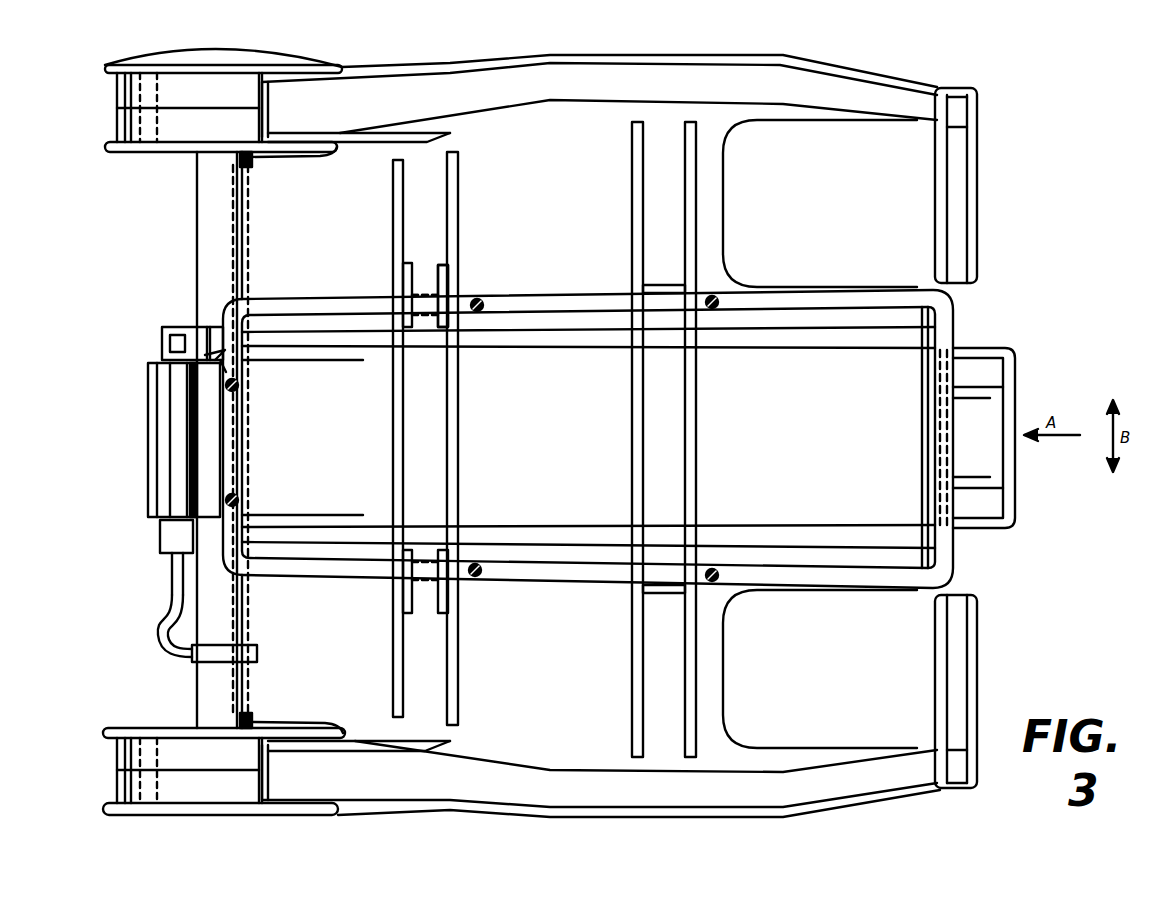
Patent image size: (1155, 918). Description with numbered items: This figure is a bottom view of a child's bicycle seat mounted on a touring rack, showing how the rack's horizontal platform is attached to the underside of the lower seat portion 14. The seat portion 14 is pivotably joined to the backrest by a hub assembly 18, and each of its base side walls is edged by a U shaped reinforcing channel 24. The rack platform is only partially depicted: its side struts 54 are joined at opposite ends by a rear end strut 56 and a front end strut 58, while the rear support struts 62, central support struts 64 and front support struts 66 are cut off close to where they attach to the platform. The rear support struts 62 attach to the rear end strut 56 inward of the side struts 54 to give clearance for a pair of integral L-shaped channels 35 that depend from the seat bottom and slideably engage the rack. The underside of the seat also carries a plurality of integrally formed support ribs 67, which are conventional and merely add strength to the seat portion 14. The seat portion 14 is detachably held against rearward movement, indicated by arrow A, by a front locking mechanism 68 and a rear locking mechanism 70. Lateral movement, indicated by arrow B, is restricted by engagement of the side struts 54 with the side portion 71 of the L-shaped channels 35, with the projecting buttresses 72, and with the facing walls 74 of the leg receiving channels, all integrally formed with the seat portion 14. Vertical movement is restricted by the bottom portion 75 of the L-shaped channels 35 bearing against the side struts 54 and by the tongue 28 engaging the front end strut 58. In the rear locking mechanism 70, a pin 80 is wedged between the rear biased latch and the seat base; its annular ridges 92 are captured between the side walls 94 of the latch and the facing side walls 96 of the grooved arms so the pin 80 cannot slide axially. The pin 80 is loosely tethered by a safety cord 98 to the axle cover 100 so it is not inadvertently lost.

The lower seat portion 14 is at (560, 430).
The hub assembly 18 is at (132, 56).
The U shaped reinforcing channel 24 is at (378, 95).
The tongue 28 is at (1012, 380).
The L-shaped channels 35 is at (424, 268).
The side struts 54 is at (543, 297).
The rear end strut 56 is at (230, 425).
The front end strut 58 is at (945, 318).
The rear support struts 62 is at (245, 500).
The central support struts 64 is at (477, 577).
The front support struts 66 is at (712, 582).
The support ribs 67 is at (460, 161).
The front locking mechanism 68 is at (1005, 340).
The rear locking mechanism 70 is at (128, 325).
The side portion 71 is at (440, 290).
The projecting buttresses 72 is at (662, 290).
The facing walls 74 is at (800, 292).
The bottom portion 75 is at (420, 305).
The pin 80 is at (170, 567).
The annular ridges 92 is at (162, 353).
The side walls 94 is at (222, 362).
The facing side walls 96 is at (222, 352).
The safety cord 98 is at (165, 643).
The axle cover 100 is at (215, 688).